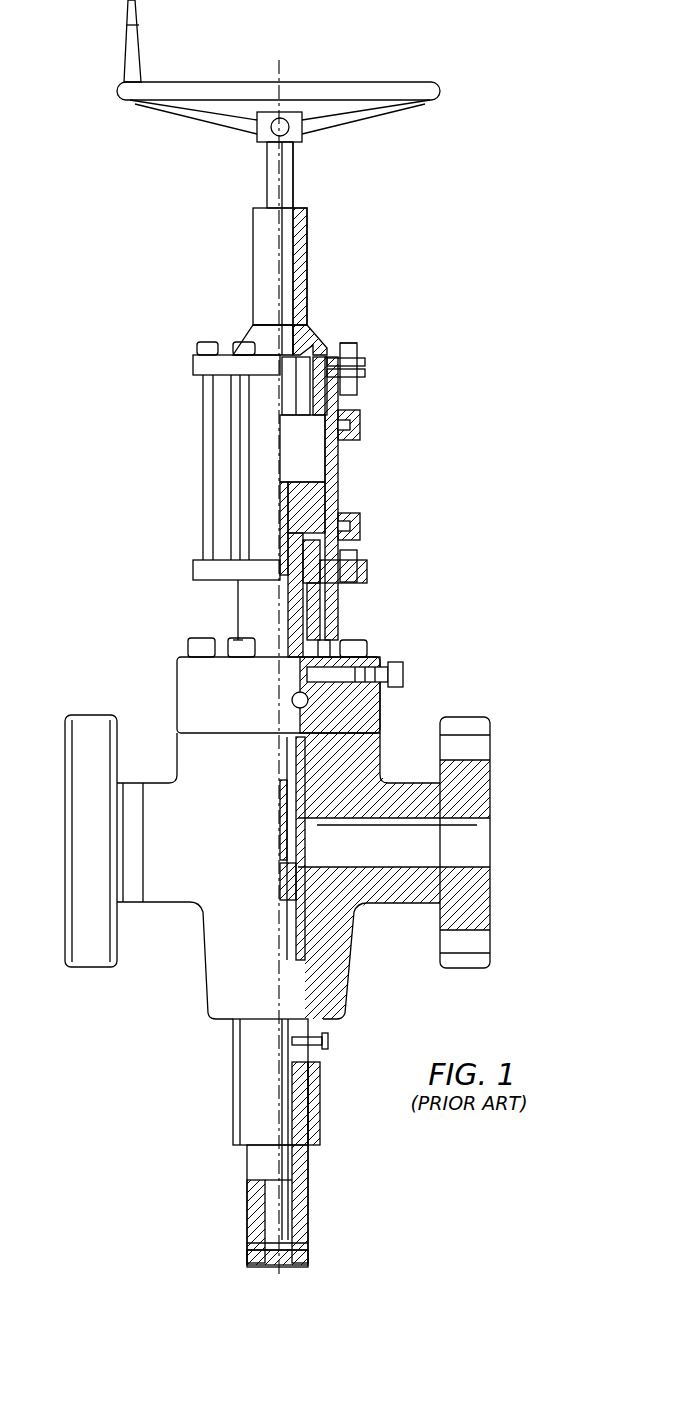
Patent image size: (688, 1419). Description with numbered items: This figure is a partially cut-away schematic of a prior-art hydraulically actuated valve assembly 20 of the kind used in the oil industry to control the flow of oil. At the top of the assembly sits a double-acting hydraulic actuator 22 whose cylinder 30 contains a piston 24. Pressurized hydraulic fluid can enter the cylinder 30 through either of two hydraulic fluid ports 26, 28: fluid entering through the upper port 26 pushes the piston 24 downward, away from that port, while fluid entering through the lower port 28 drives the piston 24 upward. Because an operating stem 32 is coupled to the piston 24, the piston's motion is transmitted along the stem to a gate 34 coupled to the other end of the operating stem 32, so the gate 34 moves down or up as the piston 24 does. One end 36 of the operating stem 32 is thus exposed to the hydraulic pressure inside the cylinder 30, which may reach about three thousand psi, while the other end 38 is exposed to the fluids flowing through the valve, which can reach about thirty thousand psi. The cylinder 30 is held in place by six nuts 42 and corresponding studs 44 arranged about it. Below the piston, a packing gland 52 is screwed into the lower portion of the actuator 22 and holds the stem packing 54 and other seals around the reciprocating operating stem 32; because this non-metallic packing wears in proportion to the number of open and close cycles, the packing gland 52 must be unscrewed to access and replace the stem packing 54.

The assembly 20 is at (430, 380).
The double-acting hydraulic actuator 22 is at (198, 507).
The piston 24 is at (310, 481).
The upper hydraulic fluid port 26 is at (352, 425).
The lower hydraulic fluid port 28 is at (355, 525).
The hydraulic cylinder 30 is at (340, 463).
The operating stem 32 is at (293, 698).
The gate 34 is at (302, 836).
The upper end of the operating stem 36 is at (300, 505).
The other end of the operating stem 38 is at (280, 840).
The nuts 42 is at (196, 347).
The studs 44 is at (202, 515).
The packing gland 52 is at (320, 598).
The stem packing 54 is at (318, 625).